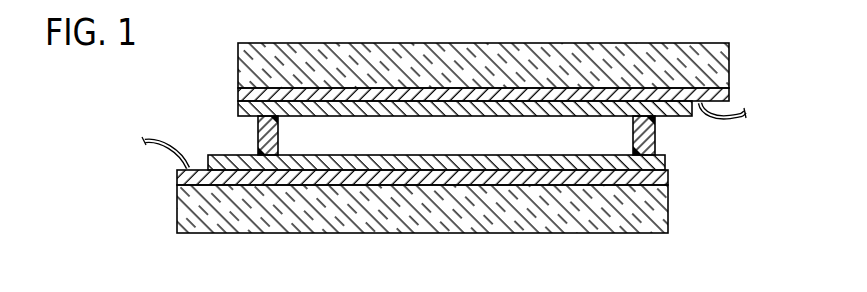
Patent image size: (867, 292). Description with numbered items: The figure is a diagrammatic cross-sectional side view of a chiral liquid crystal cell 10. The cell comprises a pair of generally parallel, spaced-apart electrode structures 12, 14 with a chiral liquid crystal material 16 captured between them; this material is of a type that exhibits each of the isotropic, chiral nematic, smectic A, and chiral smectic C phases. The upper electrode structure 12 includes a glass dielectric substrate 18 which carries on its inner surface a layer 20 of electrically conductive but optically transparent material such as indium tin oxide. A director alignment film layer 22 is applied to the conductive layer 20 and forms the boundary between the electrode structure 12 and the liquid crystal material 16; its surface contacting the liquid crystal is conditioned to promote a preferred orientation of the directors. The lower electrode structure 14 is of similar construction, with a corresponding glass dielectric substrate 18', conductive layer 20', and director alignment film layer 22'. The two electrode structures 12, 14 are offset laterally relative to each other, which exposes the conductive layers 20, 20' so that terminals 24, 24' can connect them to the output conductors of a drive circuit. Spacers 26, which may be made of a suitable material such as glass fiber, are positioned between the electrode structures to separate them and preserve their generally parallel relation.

The chiral liquid crystal cell 10 is at (385, 200).
The electrode structure 12 is at (454, 60).
The electrode structure 14 is at (412, 238).
The chiral liquid crystal material 16 is at (453, 143).
The glass dielectric substrate 18 is at (483, 44).
The glass dielectric substrate 18' is at (385, 232).
The electrically conductive, optically transparent layer 20 is at (455, 87).
The electrically conductive, optically transparent layer 20' is at (385, 176).
The director alignment film layer 22 is at (437, 108).
The director alignment film layer 22' is at (424, 145).
The terminal 24 is at (723, 136).
The terminal 24' is at (145, 139).
The spacers 26 is at (279, 133).